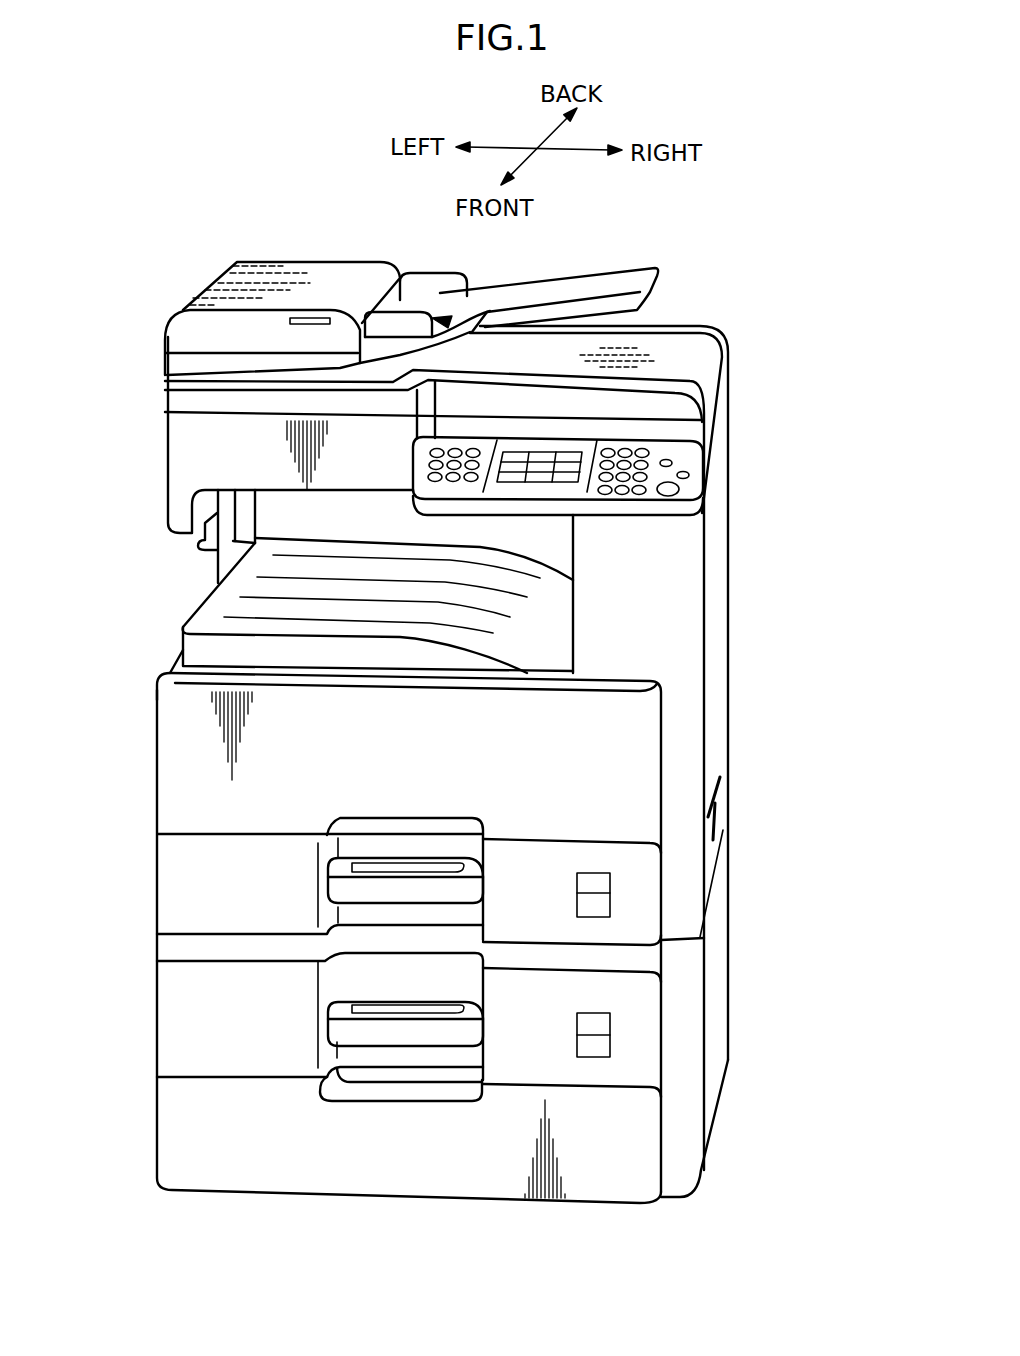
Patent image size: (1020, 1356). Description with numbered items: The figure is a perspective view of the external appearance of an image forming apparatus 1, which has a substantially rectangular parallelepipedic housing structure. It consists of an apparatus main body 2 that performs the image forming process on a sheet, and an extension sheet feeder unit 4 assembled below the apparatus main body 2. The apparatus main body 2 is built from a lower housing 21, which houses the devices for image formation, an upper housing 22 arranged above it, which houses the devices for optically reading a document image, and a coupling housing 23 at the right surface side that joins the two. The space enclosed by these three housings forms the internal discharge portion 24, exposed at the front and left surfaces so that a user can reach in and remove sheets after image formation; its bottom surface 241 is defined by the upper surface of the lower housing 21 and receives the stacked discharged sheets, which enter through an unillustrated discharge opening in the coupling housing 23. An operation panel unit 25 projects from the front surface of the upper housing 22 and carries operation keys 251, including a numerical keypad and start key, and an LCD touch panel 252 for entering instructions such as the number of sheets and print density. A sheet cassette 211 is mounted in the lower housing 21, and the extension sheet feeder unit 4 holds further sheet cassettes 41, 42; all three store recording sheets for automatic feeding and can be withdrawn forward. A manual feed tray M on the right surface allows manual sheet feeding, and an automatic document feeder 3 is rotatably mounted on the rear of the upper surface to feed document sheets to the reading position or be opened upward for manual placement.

The image forming apparatus 1 is at (469, 652).
The apparatus main body 2 is at (469, 764).
The automatic document feeder 3 is at (411, 275).
The extension sheet feeder unit 4 is at (443, 1069).
The lower housing 21 is at (447, 938).
The upper housing 22 is at (505, 748).
The coupling housing 23 is at (709, 542).
The internal discharge portion 24 is at (358, 590).
The operation panel unit 25 is at (629, 504).
The sheet cassette 211 is at (354, 881).
The bottom surface 241 is at (334, 605).
The operation keys 251 is at (643, 510).
The LCD touch panel 252 is at (539, 502).
The sheet cassette 41 is at (360, 1025).
The sheet cassette 42 is at (312, 1133).
The manual feed tray M is at (769, 852).